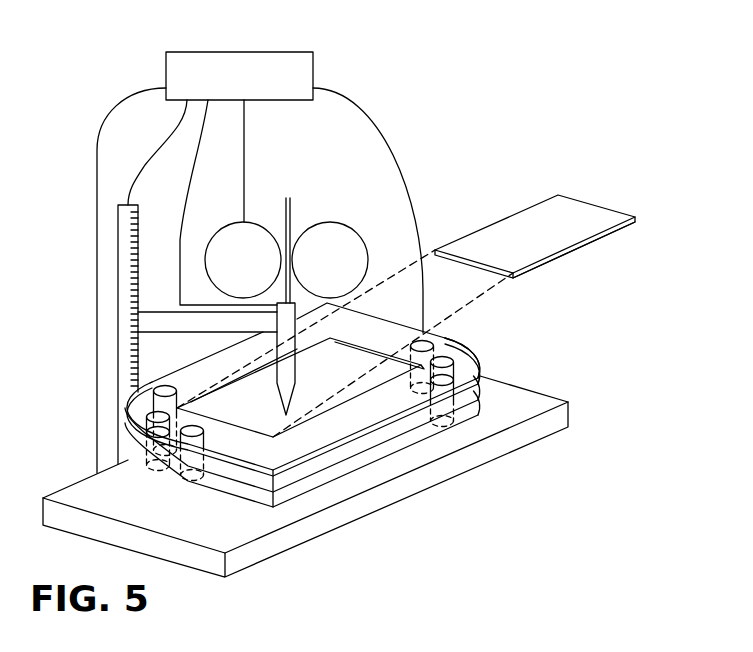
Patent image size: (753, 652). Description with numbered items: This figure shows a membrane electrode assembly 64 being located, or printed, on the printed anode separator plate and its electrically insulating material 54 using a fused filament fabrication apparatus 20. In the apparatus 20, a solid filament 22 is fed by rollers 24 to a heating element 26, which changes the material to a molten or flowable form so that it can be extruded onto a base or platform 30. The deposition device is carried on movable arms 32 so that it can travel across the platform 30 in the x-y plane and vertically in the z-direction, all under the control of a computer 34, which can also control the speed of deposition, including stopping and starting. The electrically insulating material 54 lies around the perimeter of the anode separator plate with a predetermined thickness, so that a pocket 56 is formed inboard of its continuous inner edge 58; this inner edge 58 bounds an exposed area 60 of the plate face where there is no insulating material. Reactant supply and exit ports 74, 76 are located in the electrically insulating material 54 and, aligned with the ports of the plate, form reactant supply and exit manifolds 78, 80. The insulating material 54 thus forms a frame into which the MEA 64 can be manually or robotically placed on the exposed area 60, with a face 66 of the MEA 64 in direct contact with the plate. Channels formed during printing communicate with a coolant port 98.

The FFF apparatus 20 is at (456, 141).
The solid filament 22 is at (290, 198).
The rollers 24 is at (232, 232).
The heating element 26 is at (296, 313).
The base or platform 30 is at (530, 390).
The movable arms 32 is at (118, 233).
The computer 34 is at (300, 52).
The electrically insulating material 54 is at (272, 454).
The pocket 56 is at (367, 394).
The inner edge 58 is at (330, 413).
The exposed area 60 is at (362, 363).
The membrane electrode assembly 64 is at (540, 213).
The face of the MEA 66 is at (580, 255).
The reactant supply port 74 is at (427, 338).
The reactant exit port 76 is at (452, 372).
The reactant supply manifold 78 is at (147, 415).
The reactant exit manifold 80 is at (147, 453).
The coolant port 98 is at (146, 431).